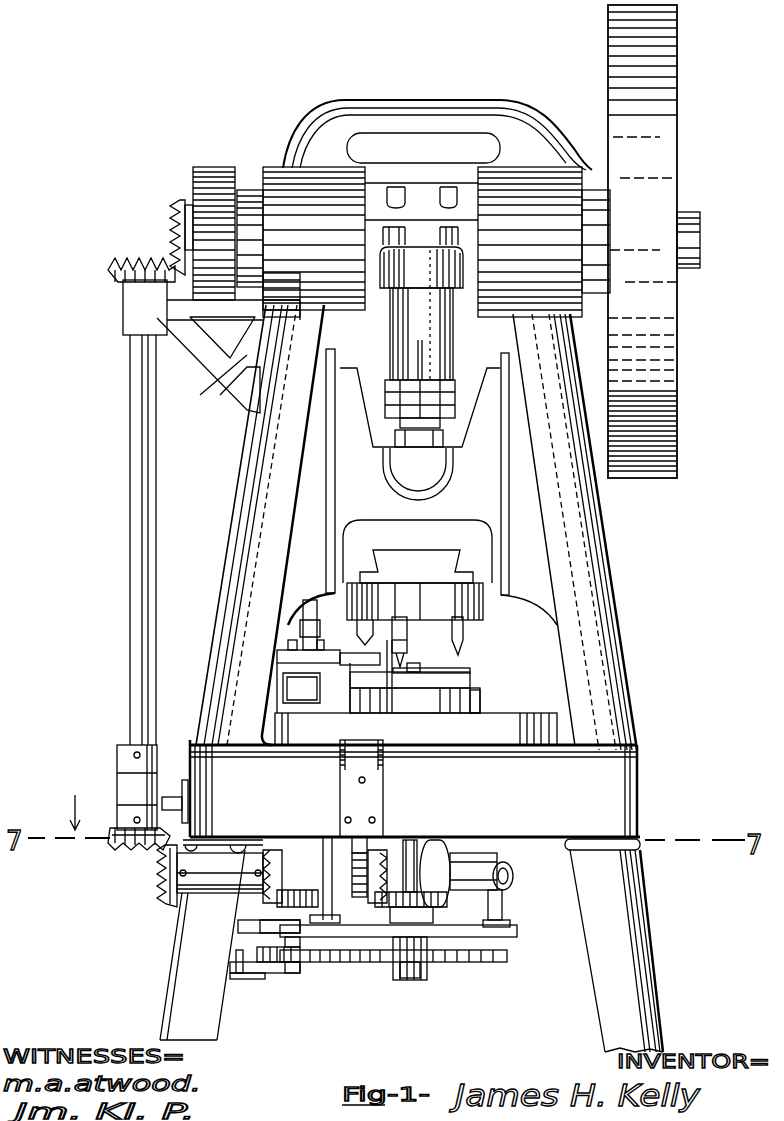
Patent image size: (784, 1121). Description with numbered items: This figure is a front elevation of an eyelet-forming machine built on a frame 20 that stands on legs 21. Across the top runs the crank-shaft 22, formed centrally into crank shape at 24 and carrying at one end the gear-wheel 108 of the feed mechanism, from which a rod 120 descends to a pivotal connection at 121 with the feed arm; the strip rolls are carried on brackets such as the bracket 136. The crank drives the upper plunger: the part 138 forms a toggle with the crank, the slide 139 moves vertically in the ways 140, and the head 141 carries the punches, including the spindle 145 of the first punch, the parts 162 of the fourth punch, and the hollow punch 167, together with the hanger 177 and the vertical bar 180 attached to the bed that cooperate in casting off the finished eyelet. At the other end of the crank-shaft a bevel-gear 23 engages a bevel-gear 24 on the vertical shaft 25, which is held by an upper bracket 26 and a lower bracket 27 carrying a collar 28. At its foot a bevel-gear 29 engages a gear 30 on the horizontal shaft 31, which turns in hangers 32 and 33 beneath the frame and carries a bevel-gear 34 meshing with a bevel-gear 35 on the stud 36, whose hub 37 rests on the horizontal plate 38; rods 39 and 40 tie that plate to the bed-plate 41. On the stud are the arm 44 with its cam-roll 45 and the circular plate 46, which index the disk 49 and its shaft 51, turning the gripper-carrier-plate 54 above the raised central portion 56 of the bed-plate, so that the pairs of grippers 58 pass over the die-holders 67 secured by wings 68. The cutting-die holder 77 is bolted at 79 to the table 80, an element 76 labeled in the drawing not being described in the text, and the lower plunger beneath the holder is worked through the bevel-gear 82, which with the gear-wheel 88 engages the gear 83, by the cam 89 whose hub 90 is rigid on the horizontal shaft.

The frame 20 is at (403, 107).
The legs 21 is at (180, 944).
The crank-shaft 22 is at (190, 215).
The bevel-gear 23 is at (678, 172).
The bevel-gear 24 is at (378, 185).
The vertical shaft 25 is at (130, 541).
The bracket 26 is at (217, 372).
The bracket 27 is at (118, 796).
The collar 28 is at (118, 766).
The bevel-gear 29 is at (115, 850).
The bevel-gear 30 is at (155, 893).
The horizontal shaft 31 is at (283, 870).
The hanger or box 32 is at (212, 893).
The hanger or box 33 is at (333, 905).
The bevel-gear 34 is at (277, 903).
The bevel-gear 35 is at (270, 940).
The short vertical shaft or stud 36 is at (296, 948).
The hub 37 is at (288, 925).
The horizontal plate 38 is at (300, 940).
The vertical rod 39 is at (503, 900).
The vertical rod 40 is at (340, 920).
The bed-plate 41 is at (275, 722).
The arm 44 is at (255, 995).
The cam-roll 45 is at (235, 962).
The disk or circular plate 46 is at (295, 973).
The horizontal disk 49 is at (391, 962).
The vertical shaft 51 is at (408, 978).
The gripper-carrier-plate 54 is at (379, 866).
The upwardly extending circular central portion of bed-plate 56 is at (478, 695).
The grippers 58 is at (450, 668).
The die-holders 67 is at (350, 690).
The wings 68 is at (461, 660).
The table 76 is at (277, 656).
The holder 77 is at (355, 648).
The bolt 79 is at (292, 641).
The table 80 is at (283, 675).
The bevel-gear 82 is at (385, 852).
The gear 83 is at (423, 907).
The gear-wheel 88 is at (515, 876).
The cam 89 is at (390, 830).
The hub 90 is at (360, 840).
The gear-wheel 108 is at (213, 170).
The rod 120 is at (310, 605).
The pivotal connection 121 is at (298, 622).
The bracket 136 is at (384, 770).
The upper plunger part 138 is at (453, 336).
The slide 139 is at (340, 508).
The ways 140 is at (505, 515).
The head 141 is at (484, 610).
The spindle 145 is at (408, 628).
The fourth punch part 162 is at (464, 630).
The hollow punch 167 is at (407, 642).
The hanger 177 is at (388, 625).
The vertical rod or bar 180 is at (415, 693).